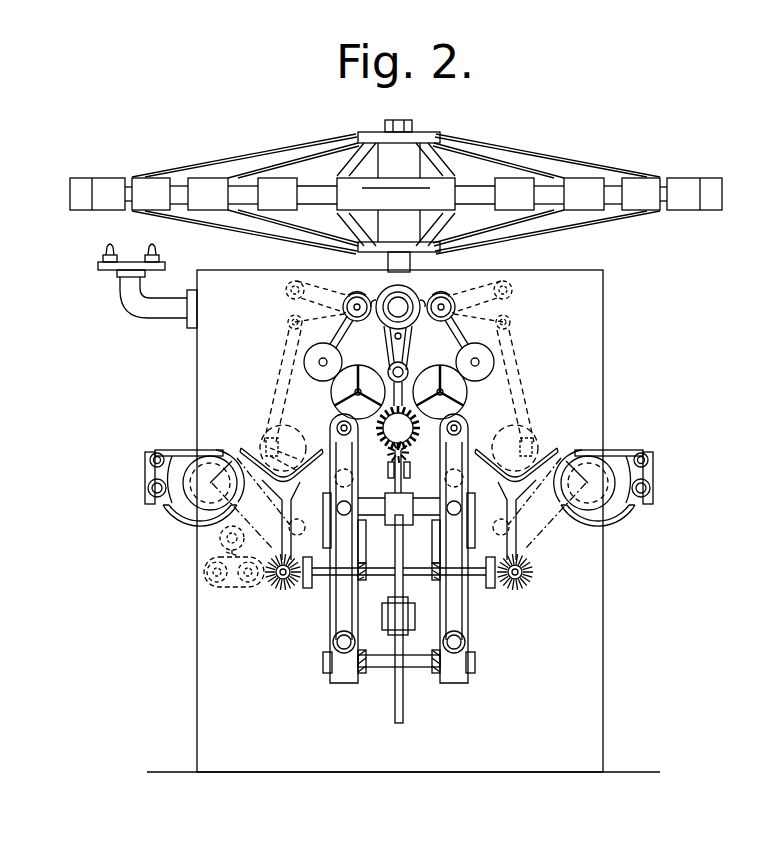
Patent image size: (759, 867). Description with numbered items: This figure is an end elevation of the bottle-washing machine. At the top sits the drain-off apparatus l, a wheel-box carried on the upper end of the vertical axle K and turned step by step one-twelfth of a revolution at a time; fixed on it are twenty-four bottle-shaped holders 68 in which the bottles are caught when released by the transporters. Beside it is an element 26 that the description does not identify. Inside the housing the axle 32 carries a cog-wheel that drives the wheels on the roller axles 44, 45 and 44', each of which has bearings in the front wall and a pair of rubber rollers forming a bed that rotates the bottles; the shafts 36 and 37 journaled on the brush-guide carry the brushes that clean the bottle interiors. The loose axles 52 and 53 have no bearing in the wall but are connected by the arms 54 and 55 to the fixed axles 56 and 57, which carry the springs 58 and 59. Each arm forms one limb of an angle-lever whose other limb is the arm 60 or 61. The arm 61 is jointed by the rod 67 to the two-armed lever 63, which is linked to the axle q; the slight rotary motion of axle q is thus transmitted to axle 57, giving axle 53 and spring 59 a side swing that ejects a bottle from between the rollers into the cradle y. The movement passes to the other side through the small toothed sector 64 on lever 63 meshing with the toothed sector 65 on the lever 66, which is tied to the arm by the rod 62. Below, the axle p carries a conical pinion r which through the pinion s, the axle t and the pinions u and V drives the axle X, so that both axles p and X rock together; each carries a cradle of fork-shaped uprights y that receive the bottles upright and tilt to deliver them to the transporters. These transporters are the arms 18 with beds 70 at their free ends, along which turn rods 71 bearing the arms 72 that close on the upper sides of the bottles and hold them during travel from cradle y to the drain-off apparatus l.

The drain-off apparatus l is at (520, 154).
The bottle-shaped holders 68 is at (277, 194).
The vertical axle K is at (406, 264).
The supply pipe 26 is at (101, 266).
The fixed axle 57 is at (306, 296).
The angle-lever arm 60 is at (296, 318).
The fixed axle 56 is at (449, 300).
The angle-lever arm 61 is at (508, 317).
The arm 55 is at (338, 328).
The arm 54 is at (462, 328).
The spring 59 is at (386, 337).
The spring 58 is at (414, 337).
The axle 45 is at (406, 372).
The loose axle 53 is at (320, 366).
The loose axle 52 is at (478, 366).
The shaft 37 is at (350, 393).
The shaft 36 is at (448, 393).
The axle 32 is at (398, 428).
The rod 67 is at (530, 368).
The rod 62 is at (280, 398).
The axle 44' is at (333, 547).
The axle 44 is at (466, 547).
The small toothed sector 64 is at (391, 470).
The toothed sector 65 is at (407, 470).
The axle t is at (372, 576).
The two-armed lever 63 is at (306, 478).
The lever 66 is at (488, 478).
The fork-shaped uprights y is at (279, 507).
The rods 71 is at (156, 455).
The transporter arms 18 is at (149, 488).
The arms 72 is at (200, 452).
The beds 70 is at (176, 519).
The axle q is at (220, 545).
The axle p is at (266, 584).
The conical pinion r is at (284, 590).
The pinion s is at (306, 588).
The pinion u is at (494, 586).
The axle X is at (532, 576).
The pinion V is at (515, 590).